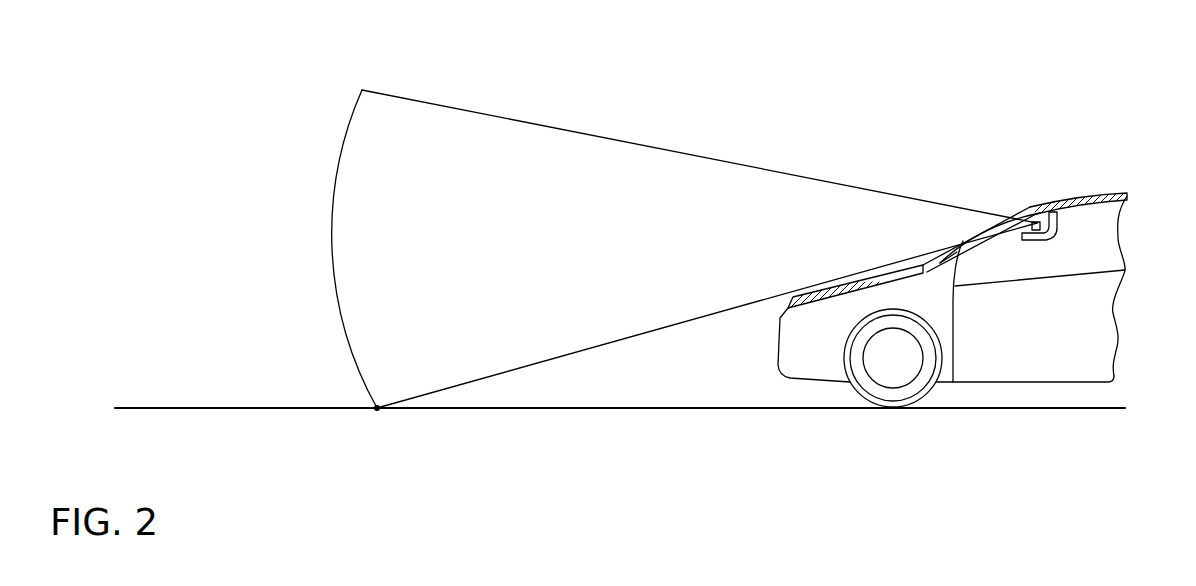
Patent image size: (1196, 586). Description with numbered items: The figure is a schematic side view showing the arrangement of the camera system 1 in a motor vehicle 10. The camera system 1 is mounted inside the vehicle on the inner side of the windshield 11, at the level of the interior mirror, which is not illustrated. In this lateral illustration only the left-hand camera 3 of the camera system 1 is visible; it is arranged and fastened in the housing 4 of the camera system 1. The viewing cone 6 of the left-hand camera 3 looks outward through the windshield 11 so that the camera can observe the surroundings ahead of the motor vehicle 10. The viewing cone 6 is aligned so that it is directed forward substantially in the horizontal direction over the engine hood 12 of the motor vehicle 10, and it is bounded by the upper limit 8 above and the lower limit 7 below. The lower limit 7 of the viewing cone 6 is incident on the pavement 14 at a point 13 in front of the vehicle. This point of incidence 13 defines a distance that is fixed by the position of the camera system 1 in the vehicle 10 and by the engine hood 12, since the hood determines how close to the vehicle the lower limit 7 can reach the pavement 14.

The camera system 1 is at (1085, 345).
The left-hand camera 3 is at (1048, 237).
The housing 4 is at (1057, 225).
The camera viewing cone 6 is at (721, 186).
The lower limit of the viewing cone 7 is at (641, 334).
The upper limit of the viewing cone 8 is at (527, 123).
The motor vehicle 10 is at (1106, 165).
The windshield 11 is at (1013, 211).
The engine hood 12 is at (810, 297).
The point of incidence 13 is at (377, 408).
The pavement 14 is at (547, 408).